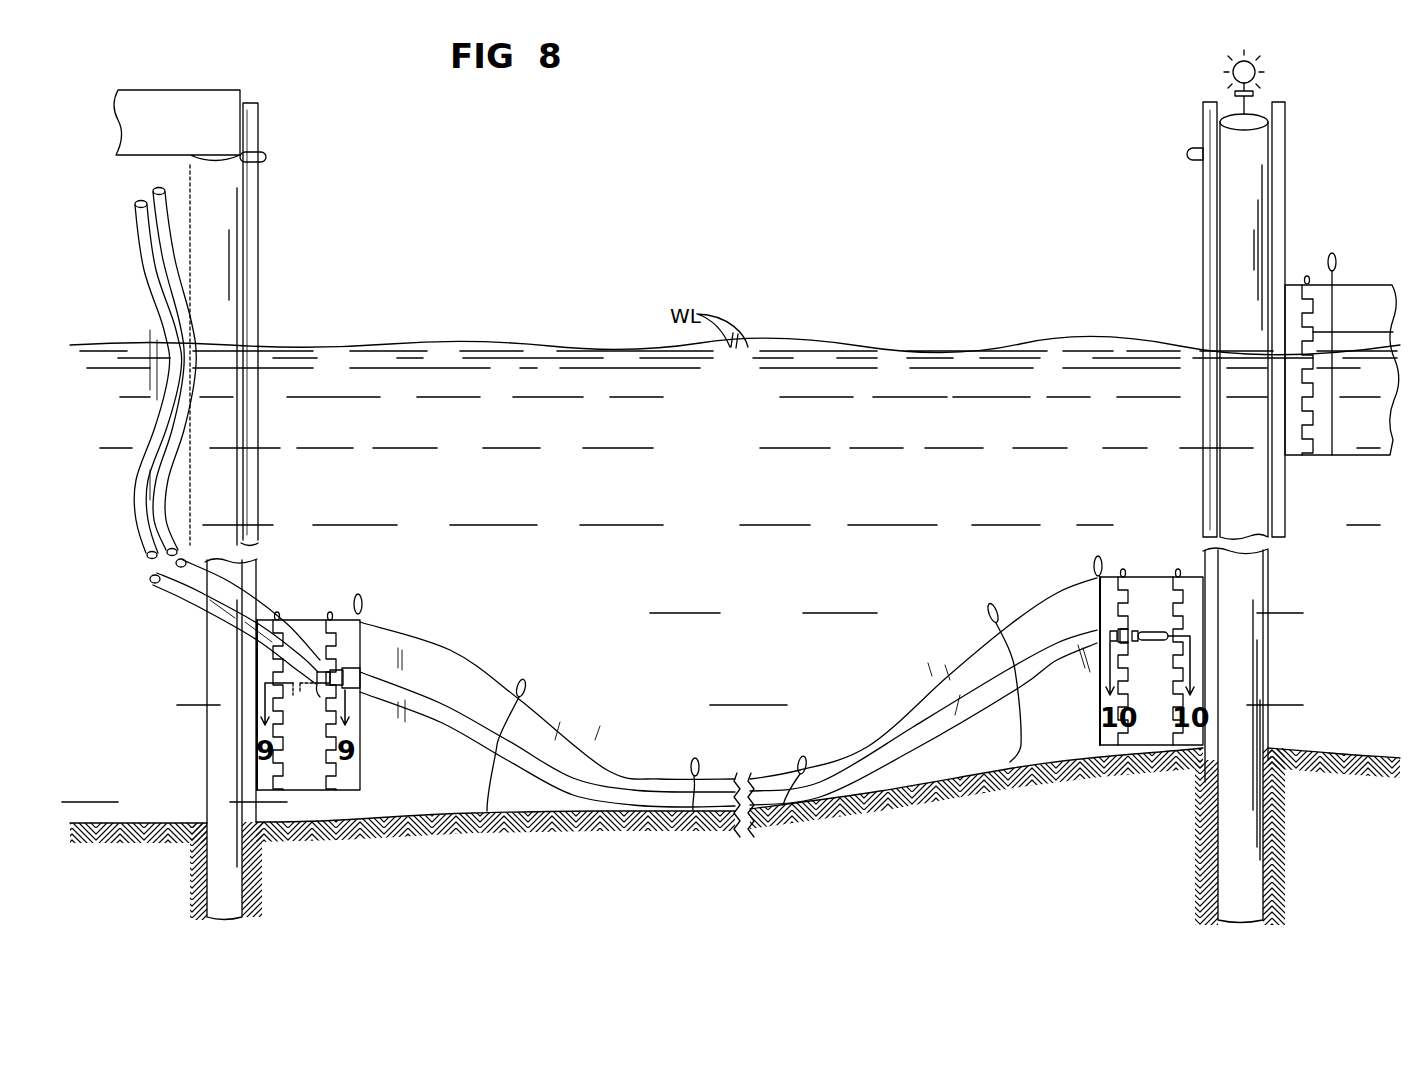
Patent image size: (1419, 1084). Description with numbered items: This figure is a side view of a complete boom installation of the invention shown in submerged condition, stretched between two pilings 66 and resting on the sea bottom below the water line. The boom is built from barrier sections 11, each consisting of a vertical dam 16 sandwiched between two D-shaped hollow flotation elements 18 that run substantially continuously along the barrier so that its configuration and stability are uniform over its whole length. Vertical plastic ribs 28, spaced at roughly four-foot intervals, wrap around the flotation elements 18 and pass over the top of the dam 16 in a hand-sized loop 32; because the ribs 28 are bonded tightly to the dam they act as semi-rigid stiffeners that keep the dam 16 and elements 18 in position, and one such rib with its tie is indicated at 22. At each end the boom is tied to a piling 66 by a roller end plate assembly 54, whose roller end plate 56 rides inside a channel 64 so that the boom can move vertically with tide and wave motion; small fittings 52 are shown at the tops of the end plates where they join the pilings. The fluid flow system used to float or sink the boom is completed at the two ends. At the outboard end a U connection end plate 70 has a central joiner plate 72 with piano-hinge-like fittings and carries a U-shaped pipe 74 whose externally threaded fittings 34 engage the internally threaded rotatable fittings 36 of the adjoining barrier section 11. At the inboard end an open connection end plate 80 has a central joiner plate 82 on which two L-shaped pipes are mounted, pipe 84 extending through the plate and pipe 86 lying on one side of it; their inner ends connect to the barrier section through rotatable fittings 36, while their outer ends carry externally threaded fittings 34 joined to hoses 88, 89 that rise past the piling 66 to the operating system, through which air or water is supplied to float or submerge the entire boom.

The barrier section 11 is at (733, 691).
The vertical dam 16 is at (607, 767).
The flotation element 18 is at (563, 776).
The tie 22 is at (498, 716).
The vertical plastic rib 28 is at (362, 637).
The hand-sized loop 32 is at (362, 600).
The externally threaded fitting 34 is at (339, 669).
The internally threaded rotatable fitting 36 is at (326, 671).
The fastener 52 is at (277, 614).
The roller end plate assembly 54 is at (272, 293).
The roller end plate 56 is at (269, 610).
The channel 64 is at (256, 493).
The piling 66 is at (232, 203).
The U connection end plate 70 is at (1140, 628).
The central joiner plate 72 is at (1140, 580).
The U-shaped pipe 74 is at (1153, 641).
The open connection end plate 80 is at (317, 668).
The central joiner plate 82 is at (317, 632).
The L-shaped pipe 84 is at (294, 690).
The L-shaped pipe 86 is at (332, 692).
The hose 88 is at (140, 510).
The hose 89 is at (200, 606).